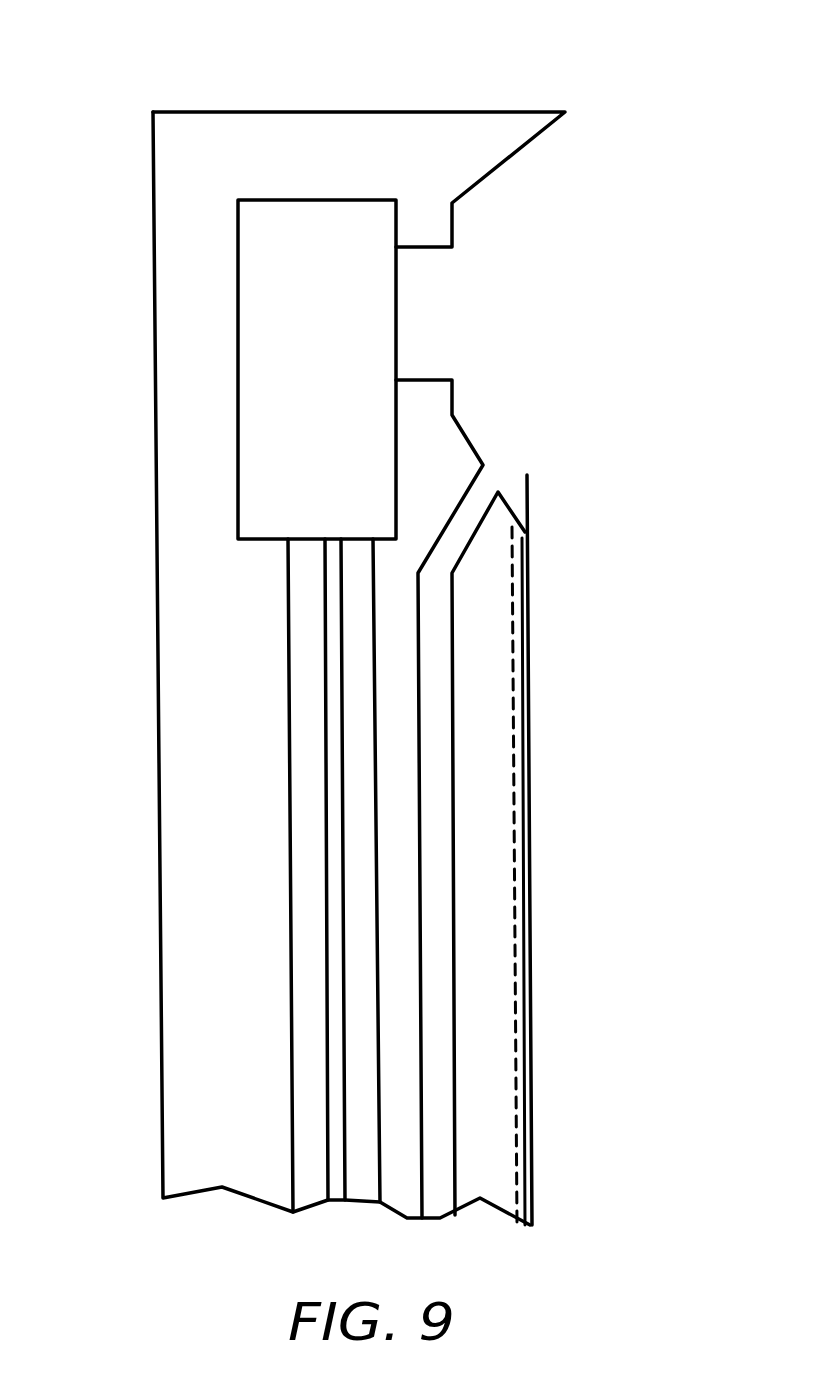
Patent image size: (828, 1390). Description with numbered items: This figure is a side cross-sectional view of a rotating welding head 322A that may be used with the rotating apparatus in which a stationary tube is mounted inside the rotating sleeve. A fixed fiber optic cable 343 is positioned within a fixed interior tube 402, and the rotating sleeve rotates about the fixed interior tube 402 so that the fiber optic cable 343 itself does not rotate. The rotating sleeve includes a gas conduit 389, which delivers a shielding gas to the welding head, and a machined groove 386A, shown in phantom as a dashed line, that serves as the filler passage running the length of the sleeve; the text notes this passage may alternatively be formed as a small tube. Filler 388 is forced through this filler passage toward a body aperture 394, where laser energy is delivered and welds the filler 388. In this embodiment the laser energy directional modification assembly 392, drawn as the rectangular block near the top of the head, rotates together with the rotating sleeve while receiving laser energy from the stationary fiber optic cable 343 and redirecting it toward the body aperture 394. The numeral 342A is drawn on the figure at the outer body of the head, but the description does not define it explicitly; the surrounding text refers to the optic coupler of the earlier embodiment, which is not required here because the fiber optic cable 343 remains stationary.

The rotating welding head 322A is at (335, 77).
The body aperture 394 is at (515, 223).
The laser energy directional modification assembly 392 is at (341, 328).
The gas conduit 389 is at (490, 487).
The filler 388 is at (528, 498).
The fixed interior tube 402 is at (300, 660).
The fixed fiber optic cable 343 is at (323, 750).
The slider body 342A is at (192, 855).
The machined groove 386A is at (512, 798).